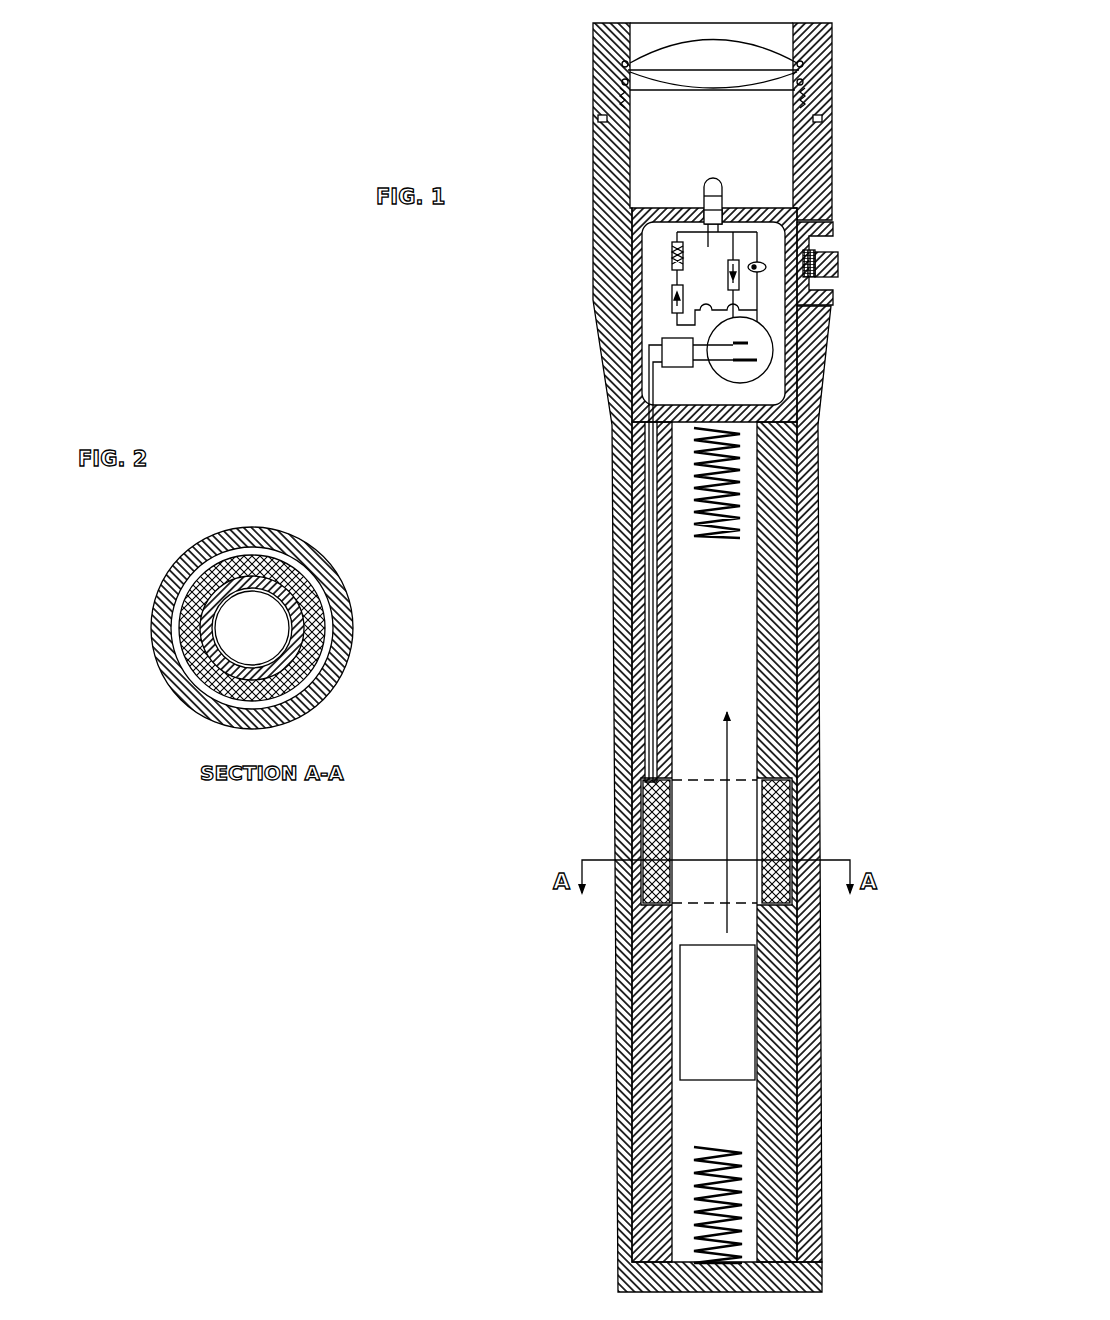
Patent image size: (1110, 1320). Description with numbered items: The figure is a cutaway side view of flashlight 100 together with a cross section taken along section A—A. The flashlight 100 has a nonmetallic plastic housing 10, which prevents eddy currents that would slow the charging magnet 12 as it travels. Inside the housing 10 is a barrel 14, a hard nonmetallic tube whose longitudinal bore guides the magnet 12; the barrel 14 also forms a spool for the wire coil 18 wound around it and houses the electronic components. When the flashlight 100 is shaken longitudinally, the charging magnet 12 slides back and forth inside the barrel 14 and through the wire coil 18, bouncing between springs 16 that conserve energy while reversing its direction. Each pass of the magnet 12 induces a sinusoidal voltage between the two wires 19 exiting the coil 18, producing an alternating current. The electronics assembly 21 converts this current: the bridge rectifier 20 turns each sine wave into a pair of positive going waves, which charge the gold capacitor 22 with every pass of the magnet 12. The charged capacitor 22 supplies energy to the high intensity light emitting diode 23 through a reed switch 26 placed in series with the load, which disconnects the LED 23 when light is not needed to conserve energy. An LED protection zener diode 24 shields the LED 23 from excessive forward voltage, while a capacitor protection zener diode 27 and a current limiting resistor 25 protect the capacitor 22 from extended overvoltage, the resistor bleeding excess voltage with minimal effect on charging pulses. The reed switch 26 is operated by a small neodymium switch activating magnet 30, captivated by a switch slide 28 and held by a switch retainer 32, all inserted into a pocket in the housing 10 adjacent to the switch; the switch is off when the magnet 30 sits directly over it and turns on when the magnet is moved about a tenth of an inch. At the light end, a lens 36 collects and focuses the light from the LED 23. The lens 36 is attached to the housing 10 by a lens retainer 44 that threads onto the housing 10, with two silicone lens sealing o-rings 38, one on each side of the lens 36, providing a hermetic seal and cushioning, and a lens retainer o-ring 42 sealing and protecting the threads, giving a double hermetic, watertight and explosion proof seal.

In FIG. 1, the housing 10 is at (818, 545).
In FIG. 2, the housing 10 is at (310, 550).
In FIG. 1, the charging magnet 12 is at (679, 1010).
In FIG. 2, the charging magnet 12 is at (232, 628).
In FIG. 1, the barrel 14 is at (665, 1208).
In FIG. 2, the barrel 14 is at (207, 680).
In FIG. 1, the springs 16 is at (744, 470).
In FIG. 1, the wire coil 18 is at (788, 823).
In FIG. 2, the wire coil 18 is at (313, 628).
In FIG. 1, the wires 19 is at (646, 705).
In FIG. 1, the bridge rectifier 20 is at (661, 352).
In FIG. 1, the electronics assembly 21 is at (780, 388).
In FIG. 1, the gold capacitor 22 is at (775, 352).
In FIG. 1, the high intensity light emitting diode 23 is at (703, 194).
In FIG. 1, the LED protection zener diode 24 is at (727, 278).
In FIG. 1, the current limiting resistor 25 is at (671, 257).
In FIG. 1, the reed switch 26 is at (765, 260).
In FIG. 1, the capacitor protection zener diode 27 is at (671, 300).
In FIG. 1, the switch slide 28 is at (840, 278).
In FIG. 1, the switch activating magnet 30 is at (840, 258).
In FIG. 1, the switch retainer 32 is at (835, 228).
In FIG. 1, the lens 36 is at (799, 70).
In FIG. 1, the lens sealing o-rings 38 is at (621, 65).
In FIG. 1, the lens retainer o-ring 42 is at (824, 118).
In FIG. 1, the lens retainer 44 is at (834, 37).
In FIG. 1, the flashlight 100 is at (610, 474).